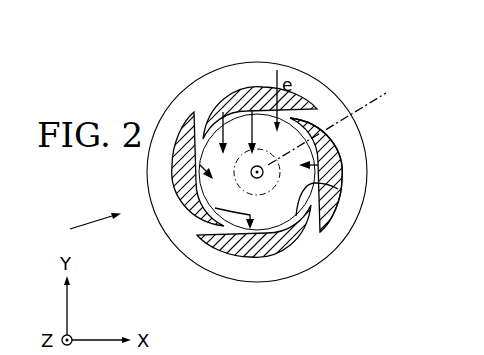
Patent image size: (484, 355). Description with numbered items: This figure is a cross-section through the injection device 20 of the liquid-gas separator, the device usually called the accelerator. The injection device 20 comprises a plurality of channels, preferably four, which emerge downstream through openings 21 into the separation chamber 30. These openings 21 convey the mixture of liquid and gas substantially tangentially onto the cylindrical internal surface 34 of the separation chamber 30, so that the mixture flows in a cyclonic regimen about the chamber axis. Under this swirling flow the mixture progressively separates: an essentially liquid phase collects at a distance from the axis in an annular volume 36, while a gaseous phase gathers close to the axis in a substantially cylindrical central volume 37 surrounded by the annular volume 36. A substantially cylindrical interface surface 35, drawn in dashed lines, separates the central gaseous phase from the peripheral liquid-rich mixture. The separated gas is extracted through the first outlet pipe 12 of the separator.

The first outlet pipe 12 is at (263, 184).
The injection device 20 is at (82, 226).
The openings 21 is at (222, 225).
The separation chamber 30 is at (322, 160).
The cylindrical internal surface 34 is at (336, 186).
The interface surface 35 is at (341, 122).
The annular volume 36 is at (216, 104).
The central volume 37 is at (250, 111).